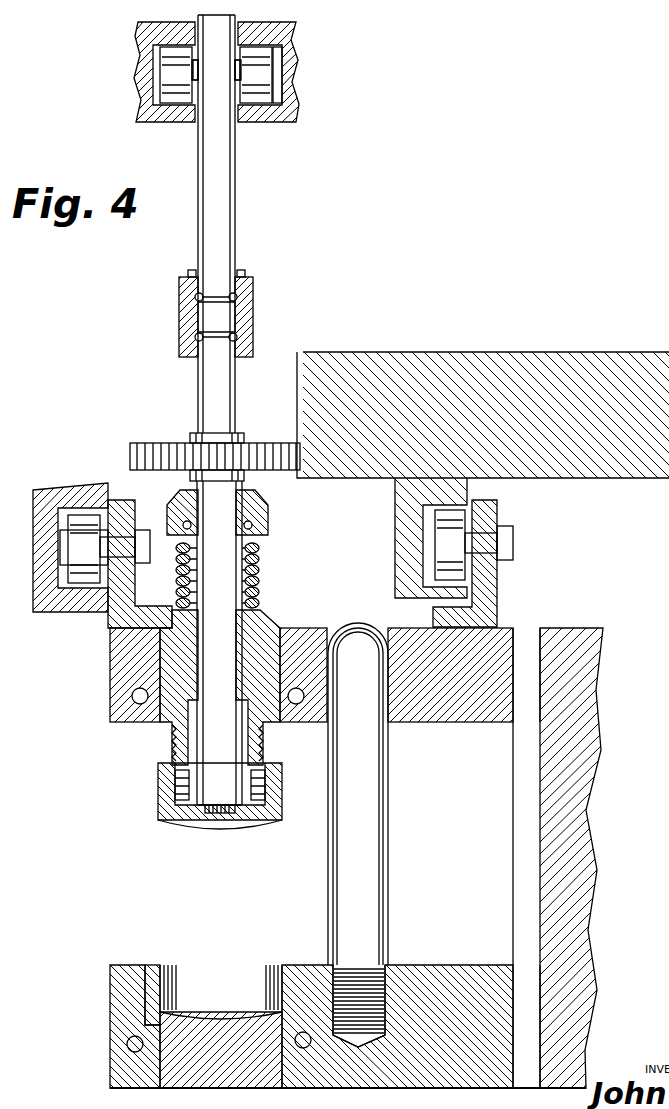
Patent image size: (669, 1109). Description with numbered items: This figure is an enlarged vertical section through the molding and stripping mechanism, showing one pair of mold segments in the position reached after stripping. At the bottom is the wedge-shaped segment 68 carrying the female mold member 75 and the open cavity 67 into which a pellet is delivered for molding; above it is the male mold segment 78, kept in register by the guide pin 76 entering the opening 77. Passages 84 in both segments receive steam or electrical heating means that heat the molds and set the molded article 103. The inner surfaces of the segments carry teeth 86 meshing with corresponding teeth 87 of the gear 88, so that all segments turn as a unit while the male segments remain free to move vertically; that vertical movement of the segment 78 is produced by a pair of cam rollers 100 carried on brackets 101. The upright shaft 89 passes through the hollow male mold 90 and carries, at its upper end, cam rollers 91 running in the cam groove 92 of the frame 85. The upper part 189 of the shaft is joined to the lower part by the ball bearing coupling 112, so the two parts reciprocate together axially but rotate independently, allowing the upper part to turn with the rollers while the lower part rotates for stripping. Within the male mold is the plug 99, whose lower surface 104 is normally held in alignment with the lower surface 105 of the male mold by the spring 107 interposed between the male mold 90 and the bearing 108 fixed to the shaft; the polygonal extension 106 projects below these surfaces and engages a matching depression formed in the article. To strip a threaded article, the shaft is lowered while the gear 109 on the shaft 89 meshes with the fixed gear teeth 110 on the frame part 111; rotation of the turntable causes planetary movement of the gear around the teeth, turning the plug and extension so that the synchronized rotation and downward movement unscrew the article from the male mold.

The frame 85 is at (174, 123).
The cam rollers 91 is at (168, 98).
The cam groove 92 is at (274, 107).
The upper part of the shaft 189 is at (231, 227).
The ball bearing coupling 112 is at (252, 321).
The upright shaft 89 is at (200, 405).
The gear 109 is at (266, 443).
The fixed gear teeth 110 is at (300, 353).
The frame part 111 is at (403, 355).
The cam rollers 100 is at (470, 521).
The brackets 101 is at (499, 582).
The male mold segment 78 is at (293, 627).
The opening 77 is at (349, 625).
The guide pin 76 is at (390, 880).
The teeth 86 is at (528, 628).
The teeth 87 is at (512, 750).
The gear 88 is at (600, 628).
The passages 84 is at (131, 697).
The male mold 90 is at (168, 728).
The plug 99 is at (196, 828).
The polygonal extension 106 is at (226, 826).
The article 103 is at (165, 818).
The lower surface of the plug 104 is at (242, 816).
The lower surface of the male mold 105 is at (174, 785).
The bearing 108 is at (270, 531).
The spring 107 is at (262, 549).
The segment 68 is at (112, 1002).
The female mold member 75 is at (157, 965).
The cavity 67 is at (230, 970).